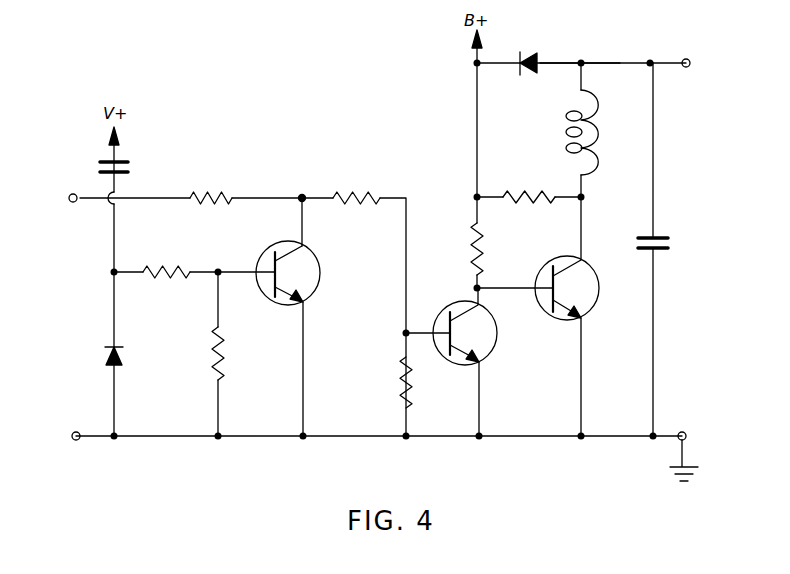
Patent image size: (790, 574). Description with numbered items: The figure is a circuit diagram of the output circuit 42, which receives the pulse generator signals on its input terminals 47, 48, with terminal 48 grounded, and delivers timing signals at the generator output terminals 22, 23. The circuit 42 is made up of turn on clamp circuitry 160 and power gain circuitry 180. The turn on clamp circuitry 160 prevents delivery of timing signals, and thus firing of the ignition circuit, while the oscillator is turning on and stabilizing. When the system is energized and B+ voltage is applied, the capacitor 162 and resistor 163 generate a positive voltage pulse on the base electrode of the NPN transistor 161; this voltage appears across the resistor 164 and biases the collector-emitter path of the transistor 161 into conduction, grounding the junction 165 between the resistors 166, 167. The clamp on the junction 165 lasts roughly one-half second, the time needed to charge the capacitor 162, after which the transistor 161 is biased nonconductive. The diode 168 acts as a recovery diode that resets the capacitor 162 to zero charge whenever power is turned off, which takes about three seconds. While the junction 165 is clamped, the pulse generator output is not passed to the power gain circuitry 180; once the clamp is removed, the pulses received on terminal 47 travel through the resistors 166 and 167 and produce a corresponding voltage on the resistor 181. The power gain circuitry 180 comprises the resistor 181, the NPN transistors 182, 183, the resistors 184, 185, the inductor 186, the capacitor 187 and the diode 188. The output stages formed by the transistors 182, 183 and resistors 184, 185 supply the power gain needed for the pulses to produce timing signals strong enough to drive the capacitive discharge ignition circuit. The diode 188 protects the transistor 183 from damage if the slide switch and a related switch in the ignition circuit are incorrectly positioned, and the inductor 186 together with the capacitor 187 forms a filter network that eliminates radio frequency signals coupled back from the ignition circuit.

The generator output terminal 22 is at (690, 58).
The generator output terminal 23 is at (686, 430).
The output circuit 42 is at (560, 58).
The input terminal 47 is at (70, 203).
The input terminal 48 is at (73, 431).
The turn on clamp circuitry 160 is at (307, 260).
The NPN transistor 161 is at (320, 284).
The capacitor 162 is at (137, 154).
The resistor 163 is at (180, 268).
The resistor 164 is at (212, 349).
The junction 165 is at (303, 194).
The resistor 166 is at (222, 193).
The resistor 167 is at (368, 194).
The diode 168 is at (105, 355).
The power gain circuitry 180 is at (531, 294).
The resistor 181 is at (400, 378).
The NPN transistor 182 is at (486, 353).
The NPN transistor 183 is at (590, 270).
The resistor 184 is at (484, 239).
The resistor 185 is at (530, 194).
The inductor 186 is at (598, 128).
The capacitor 187 is at (664, 236).
The diode 188 is at (535, 55).